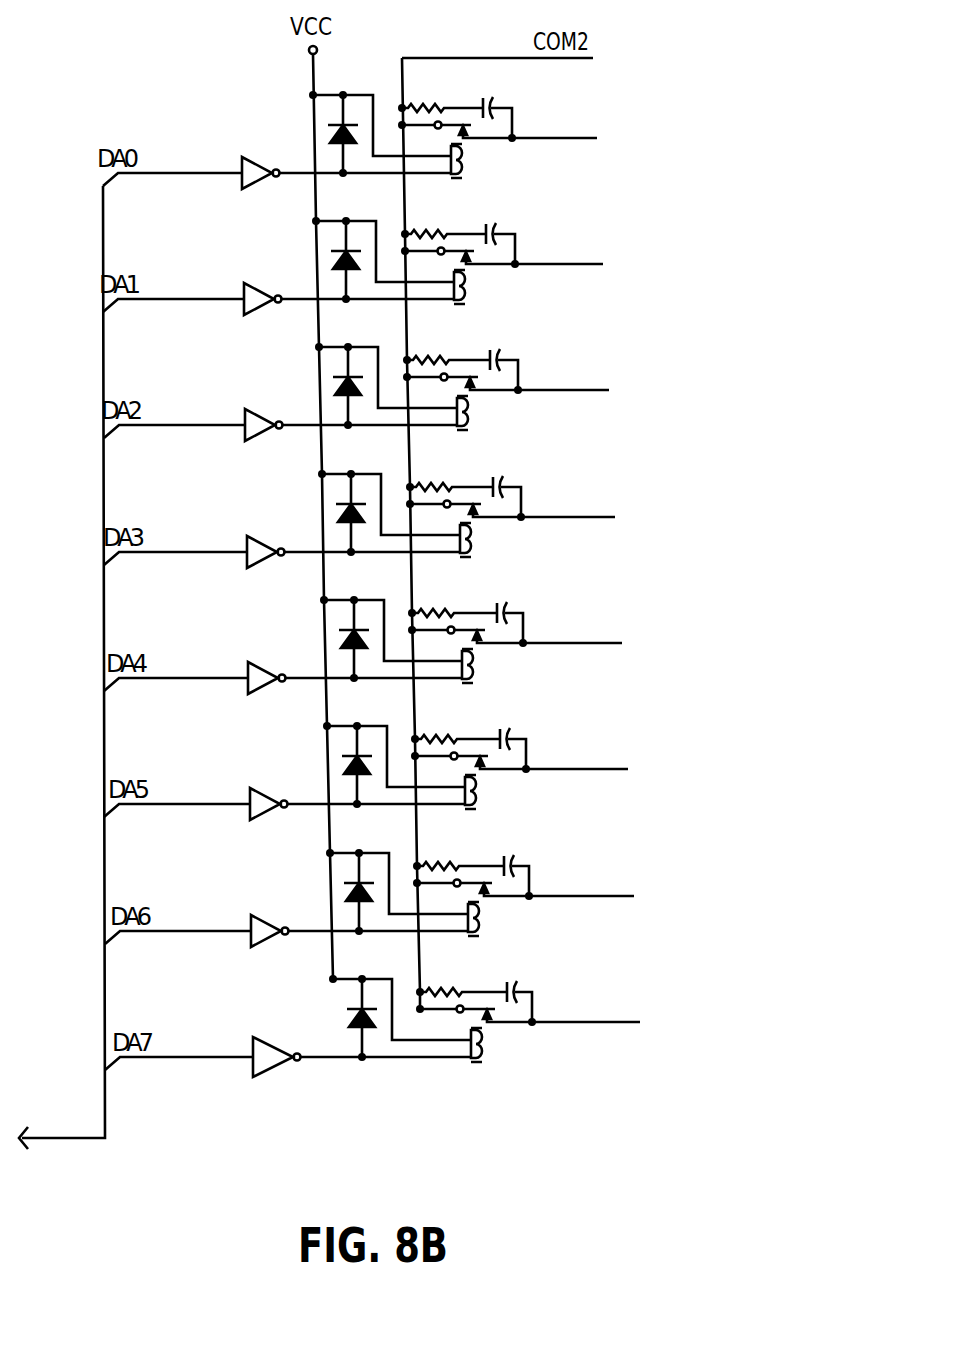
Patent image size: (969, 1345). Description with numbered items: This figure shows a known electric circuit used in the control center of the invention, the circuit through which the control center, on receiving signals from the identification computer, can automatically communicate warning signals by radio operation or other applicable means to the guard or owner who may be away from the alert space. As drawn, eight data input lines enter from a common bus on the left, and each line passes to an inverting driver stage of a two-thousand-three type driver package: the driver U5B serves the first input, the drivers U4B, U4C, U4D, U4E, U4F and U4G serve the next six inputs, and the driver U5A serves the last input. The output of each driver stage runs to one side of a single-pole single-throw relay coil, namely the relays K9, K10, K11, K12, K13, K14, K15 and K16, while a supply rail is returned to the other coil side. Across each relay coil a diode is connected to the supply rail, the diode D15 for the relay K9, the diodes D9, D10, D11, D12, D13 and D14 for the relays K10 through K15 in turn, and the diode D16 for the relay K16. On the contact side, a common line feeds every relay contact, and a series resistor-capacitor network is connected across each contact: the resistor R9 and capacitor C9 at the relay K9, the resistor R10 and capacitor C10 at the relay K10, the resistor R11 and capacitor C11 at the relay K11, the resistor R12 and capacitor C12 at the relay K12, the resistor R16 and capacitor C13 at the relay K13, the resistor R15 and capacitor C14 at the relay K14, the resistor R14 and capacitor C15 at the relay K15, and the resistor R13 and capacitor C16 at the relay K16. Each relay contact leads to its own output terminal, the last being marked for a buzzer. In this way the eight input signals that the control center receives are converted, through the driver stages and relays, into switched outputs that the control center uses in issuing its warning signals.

The inverter driver (ULN2003) U5B is at (277, 166).
The flyback diode D15 is at (335, 127).
The resistor 0.1K R9 is at (440, 86).
The capacitor C9 is at (533, 101).
The relay SPST K9 is at (508, 152).
The inverter driver (ULN2003) U4B is at (278, 292).
The flyback diode D9 is at (344, 253).
The resistor 0.1K R10 is at (443, 205).
The capacitor C10 is at (536, 228).
The relay SPST K10 is at (512, 278).
The inverter driver (ULN2003) U4C is at (280, 418).
The flyback diode D10 is at (346, 379).
The resistor 0.1K R11 is at (446, 331).
The capacitor C11 is at (532, 354).
The relay SPST K11 is at (515, 404).
The inverter driver (ULN2003) U4D is at (282, 545).
The flyback diode D11 is at (347, 506).
The resistor 0.1K R12 is at (449, 458).
The capacitor C12 is at (536, 481).
The relay SPST K12 is at (518, 531).
The inverter driver (ULN2003) U4E is at (283, 671).
The flyback diode D12 is at (348, 632).
The resistor 0.1K R16 is at (452, 584).
The capacitor C13 is at (539, 607).
The relay SPST K13 is at (521, 657).
The inverter driver (ULN2003) U4F is at (284, 797).
The flyback diode D13 is at (350, 758).
The resistor 0.1K R15 is at (455, 710).
The capacitor C14 is at (543, 733).
The relay SPST K14 is at (524, 783).
The inverter driver (ULN2003) U4G is at (286, 924).
The flyback diode D14 is at (351, 885).
The resistor 0.1K R14 is at (458, 837).
The capacitor C15 is at (546, 860).
The relay SPST K15 is at (527, 910).
The inverter driver (ULN2003) U5A is at (288, 1050).
The flyback diode D16 is at (353, 1011).
The resistor 0.1K R13 is at (461, 963).
The capacitor C16 is at (550, 986).
The relay SPST K16 is at (531, 1036).